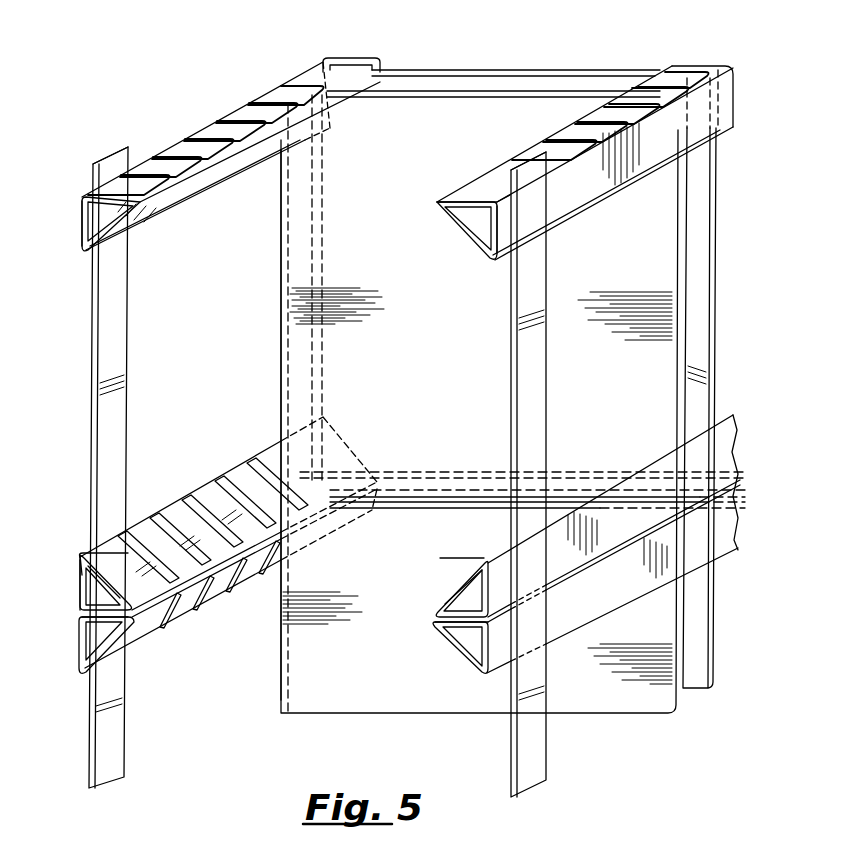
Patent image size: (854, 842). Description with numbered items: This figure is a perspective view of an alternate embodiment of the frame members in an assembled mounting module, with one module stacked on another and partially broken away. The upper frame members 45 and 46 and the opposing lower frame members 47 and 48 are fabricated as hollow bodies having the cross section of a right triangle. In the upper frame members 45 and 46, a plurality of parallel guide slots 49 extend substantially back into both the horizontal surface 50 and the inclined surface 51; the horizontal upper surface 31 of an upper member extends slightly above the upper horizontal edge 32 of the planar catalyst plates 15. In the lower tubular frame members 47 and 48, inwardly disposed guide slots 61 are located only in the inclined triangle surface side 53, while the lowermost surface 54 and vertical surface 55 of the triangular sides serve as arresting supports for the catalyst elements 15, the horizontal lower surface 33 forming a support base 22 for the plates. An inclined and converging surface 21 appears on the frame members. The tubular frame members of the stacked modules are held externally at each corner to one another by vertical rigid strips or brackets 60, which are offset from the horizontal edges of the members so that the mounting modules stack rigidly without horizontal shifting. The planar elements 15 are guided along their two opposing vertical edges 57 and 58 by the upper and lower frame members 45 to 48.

The catalyst plates 15 is at (290, 268).
The inclined and converging surface 21 is at (268, 460).
The arresting surface base 22 is at (100, 603).
The horizontal upper surface 31 is at (662, 78).
The upper horizontal edge 32 is at (465, 72).
The horizontal lower surface 33 is at (95, 625).
The upper frame member 45 is at (76, 236).
The upper frame member 46 is at (448, 230).
The lower tubular frame member 47 is at (70, 549).
The lower tubular frame member 48 is at (473, 556).
The guide slots 49 is at (240, 100).
The horizontal surface 50 is at (272, 100).
The inclined surface 51 is at (252, 163).
The inclined triangle surface side 53 is at (140, 530).
The lowermost surface 54 is at (95, 606).
The vertical surface 55 is at (72, 570).
The vertical edge 57 is at (283, 355).
The vertical edge 58 is at (716, 262).
The vertical rigid strips or brackets 60 is at (125, 328).
The guide slots 61 is at (245, 462).